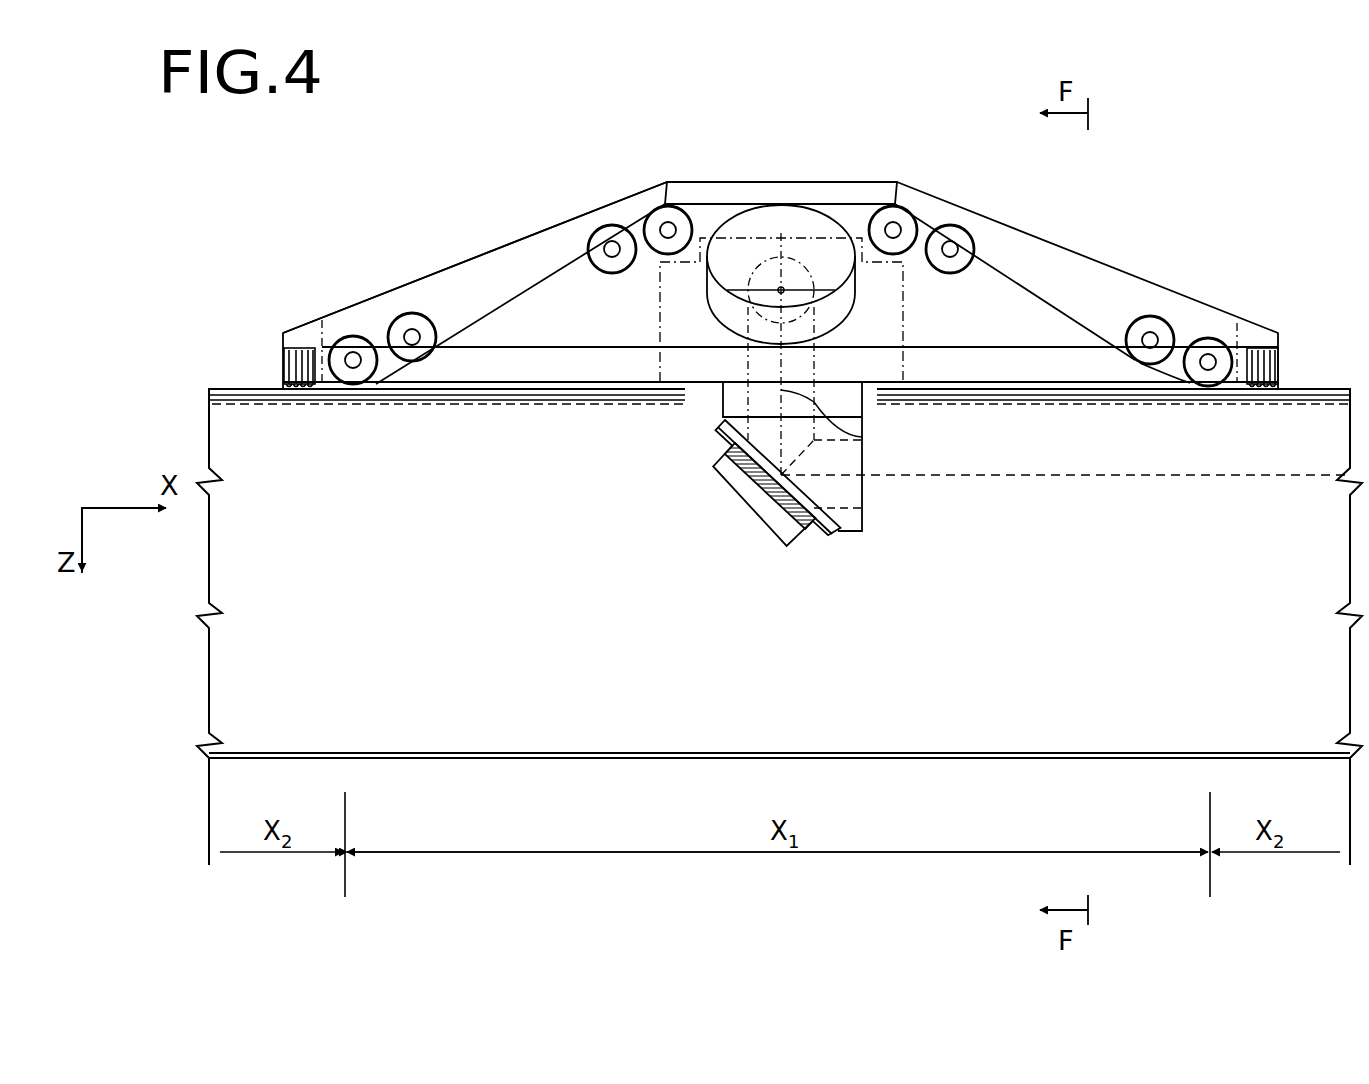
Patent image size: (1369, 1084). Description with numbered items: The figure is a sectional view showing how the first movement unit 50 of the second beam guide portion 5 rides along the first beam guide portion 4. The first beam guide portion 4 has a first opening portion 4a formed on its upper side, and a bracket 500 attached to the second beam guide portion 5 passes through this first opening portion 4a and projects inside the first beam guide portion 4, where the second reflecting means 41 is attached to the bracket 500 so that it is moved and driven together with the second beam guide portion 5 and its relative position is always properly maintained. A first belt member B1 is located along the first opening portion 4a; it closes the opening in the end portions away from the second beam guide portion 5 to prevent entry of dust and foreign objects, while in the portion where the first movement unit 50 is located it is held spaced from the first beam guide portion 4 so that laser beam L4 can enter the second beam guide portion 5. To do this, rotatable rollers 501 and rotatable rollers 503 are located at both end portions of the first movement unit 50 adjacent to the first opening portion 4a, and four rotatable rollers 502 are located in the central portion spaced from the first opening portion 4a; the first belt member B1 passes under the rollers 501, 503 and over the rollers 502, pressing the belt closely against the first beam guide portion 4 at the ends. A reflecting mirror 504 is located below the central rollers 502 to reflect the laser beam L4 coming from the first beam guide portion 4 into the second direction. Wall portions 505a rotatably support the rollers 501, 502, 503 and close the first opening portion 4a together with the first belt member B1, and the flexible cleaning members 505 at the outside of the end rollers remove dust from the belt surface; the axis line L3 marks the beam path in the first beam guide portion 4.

The first beam guide portion 4 is at (176, 428).
The first opening portion 4a is at (622, 393).
The second beam guide portion 5 is at (176, 310).
The second reflecting means 41 is at (791, 549).
The first movement unit 50 is at (719, 178).
The bracket 500 is at (718, 404).
The rotatable roller 501 is at (343, 337).
The rotatable roller 502 is at (605, 226).
The rotatable roller 503 is at (1152, 316).
The reflecting mirror 504 is at (784, 216).
The spring units 505 is at (284, 372).
The wall portion 505a is at (536, 233).
The first belt member B1 is at (1067, 310).
The optical axis line L3 is at (1283, 483).
The laser beam L4 is at (862, 437).